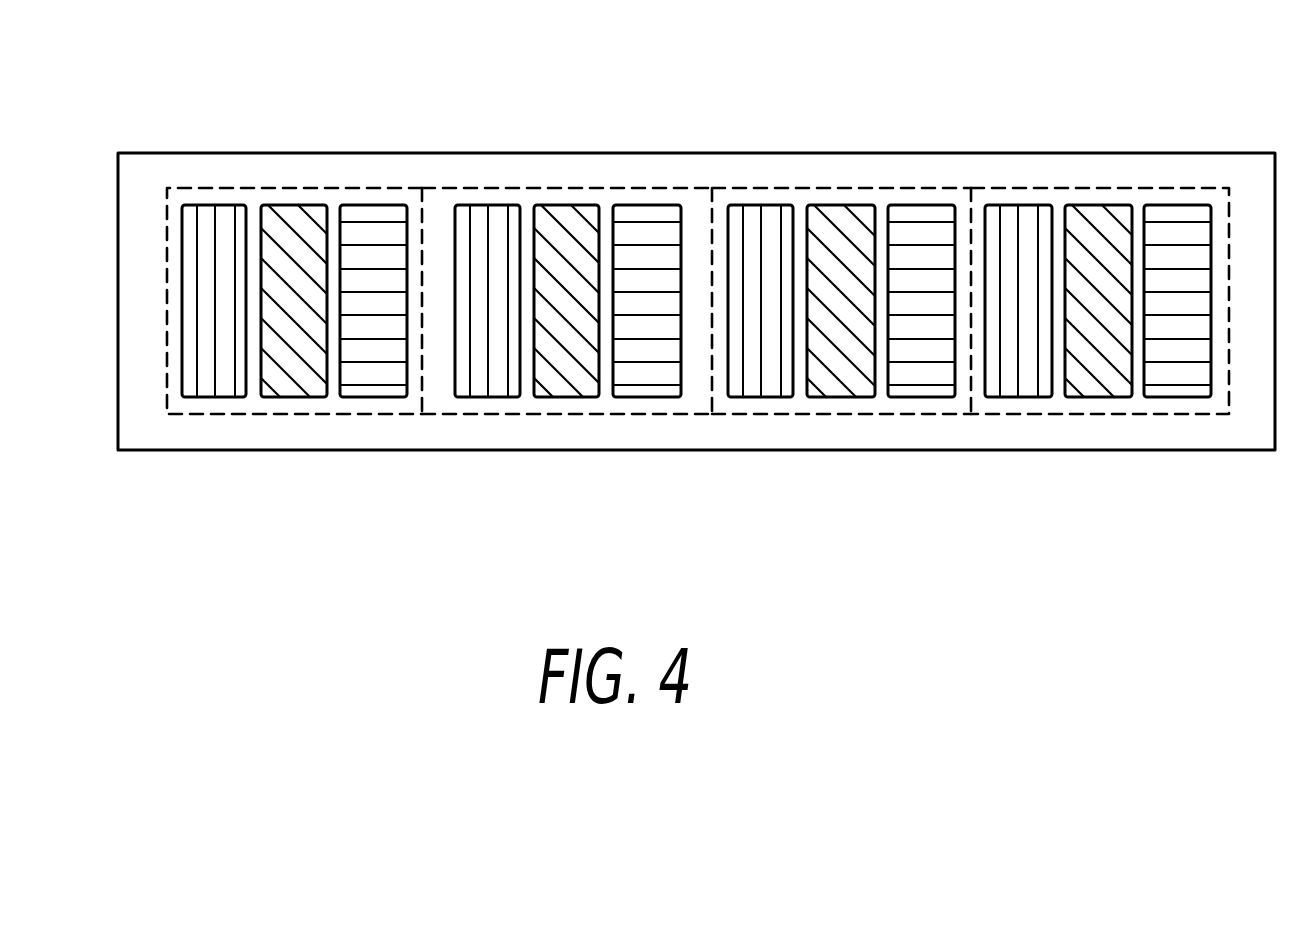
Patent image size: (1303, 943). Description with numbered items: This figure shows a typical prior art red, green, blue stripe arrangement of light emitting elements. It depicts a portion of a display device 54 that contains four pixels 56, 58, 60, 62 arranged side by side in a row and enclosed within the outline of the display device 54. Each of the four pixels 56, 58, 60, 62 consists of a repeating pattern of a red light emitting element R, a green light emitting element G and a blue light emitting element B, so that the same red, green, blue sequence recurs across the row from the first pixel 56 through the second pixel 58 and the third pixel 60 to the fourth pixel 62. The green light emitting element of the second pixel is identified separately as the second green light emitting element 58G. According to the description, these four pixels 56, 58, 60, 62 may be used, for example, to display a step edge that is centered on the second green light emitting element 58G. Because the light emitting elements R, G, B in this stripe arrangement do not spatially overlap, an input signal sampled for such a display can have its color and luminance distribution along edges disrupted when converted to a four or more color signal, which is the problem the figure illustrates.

The display device 54 is at (1030, 153).
The pixel 56 is at (287, 289).
The pixel 58 is at (567, 304).
The second green light emitting element 58G is at (567, 218).
The pixel 60 is at (863, 414).
The pixel 62 is at (1113, 414).
The red light emitting element R is at (207, 397).
The green light emitting element G is at (310, 397).
The blue light emitting element B is at (383, 397).